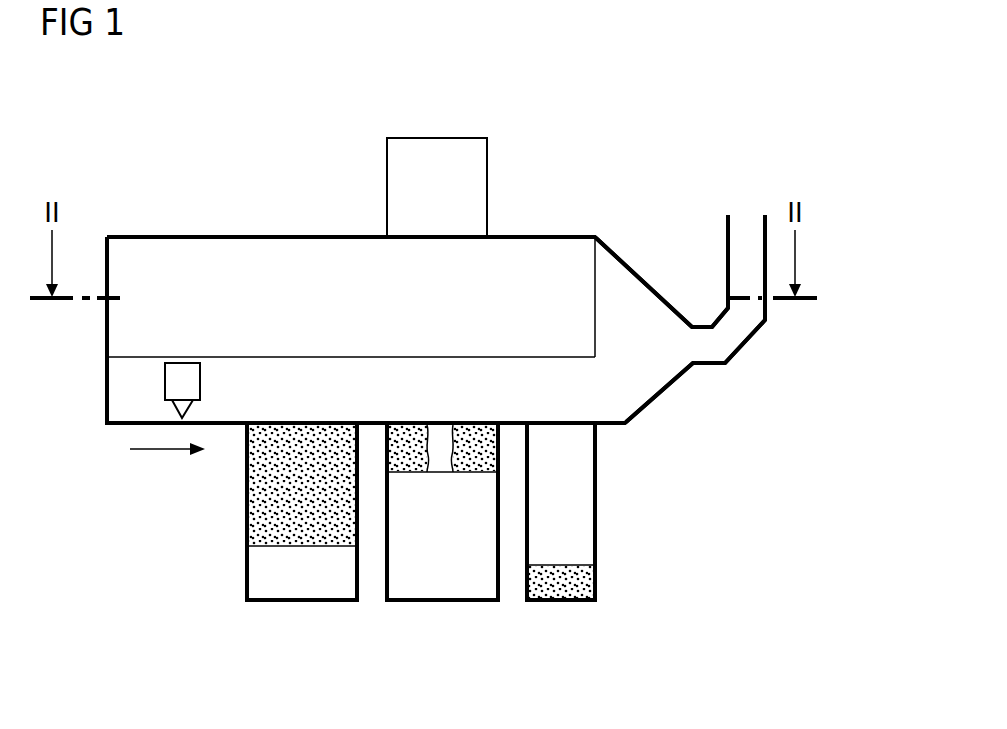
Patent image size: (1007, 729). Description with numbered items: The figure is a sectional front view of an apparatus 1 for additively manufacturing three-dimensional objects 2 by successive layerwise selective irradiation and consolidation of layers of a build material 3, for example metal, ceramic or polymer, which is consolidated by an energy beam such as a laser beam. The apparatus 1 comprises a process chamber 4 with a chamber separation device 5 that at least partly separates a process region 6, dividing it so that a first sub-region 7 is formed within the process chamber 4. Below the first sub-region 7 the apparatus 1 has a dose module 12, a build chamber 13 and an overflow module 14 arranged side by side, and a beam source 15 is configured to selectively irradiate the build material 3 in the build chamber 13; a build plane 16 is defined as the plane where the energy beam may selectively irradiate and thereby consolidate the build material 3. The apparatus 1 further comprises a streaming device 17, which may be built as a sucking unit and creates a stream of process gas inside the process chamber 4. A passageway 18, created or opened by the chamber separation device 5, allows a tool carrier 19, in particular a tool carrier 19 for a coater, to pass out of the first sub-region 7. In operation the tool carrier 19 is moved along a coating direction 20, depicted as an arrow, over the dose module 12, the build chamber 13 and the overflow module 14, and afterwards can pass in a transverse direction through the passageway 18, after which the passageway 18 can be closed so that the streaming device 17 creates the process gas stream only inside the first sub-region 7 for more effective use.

The apparatus 1 is at (259, 84).
The three-dimensional object 2 is at (439, 458).
The build material 3 is at (258, 522).
The process chamber 4 is at (315, 236).
The chamber separation device 5 is at (234, 258).
The process region 6 is at (153, 236).
The first sub-region 7 is at (283, 311).
The dose module 12 is at (298, 632).
The build chamber 13 is at (446, 632).
The overflow module 14 is at (561, 632).
The beam source 15 is at (436, 138).
The build plane 16 is at (478, 423).
The streaming device 17 is at (655, 222).
The passageway 18 is at (545, 375).
The tool carrier 19 is at (165, 372).
The coating direction 20 is at (150, 452).